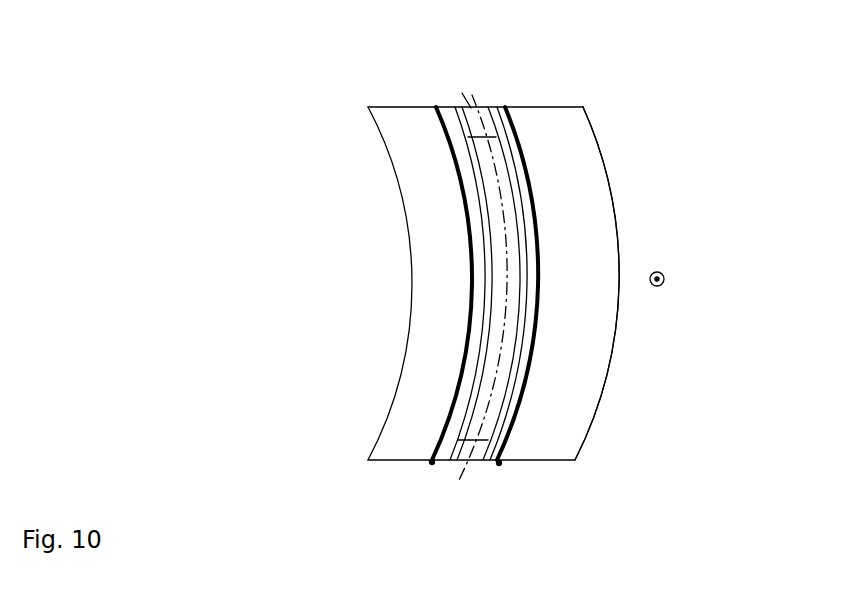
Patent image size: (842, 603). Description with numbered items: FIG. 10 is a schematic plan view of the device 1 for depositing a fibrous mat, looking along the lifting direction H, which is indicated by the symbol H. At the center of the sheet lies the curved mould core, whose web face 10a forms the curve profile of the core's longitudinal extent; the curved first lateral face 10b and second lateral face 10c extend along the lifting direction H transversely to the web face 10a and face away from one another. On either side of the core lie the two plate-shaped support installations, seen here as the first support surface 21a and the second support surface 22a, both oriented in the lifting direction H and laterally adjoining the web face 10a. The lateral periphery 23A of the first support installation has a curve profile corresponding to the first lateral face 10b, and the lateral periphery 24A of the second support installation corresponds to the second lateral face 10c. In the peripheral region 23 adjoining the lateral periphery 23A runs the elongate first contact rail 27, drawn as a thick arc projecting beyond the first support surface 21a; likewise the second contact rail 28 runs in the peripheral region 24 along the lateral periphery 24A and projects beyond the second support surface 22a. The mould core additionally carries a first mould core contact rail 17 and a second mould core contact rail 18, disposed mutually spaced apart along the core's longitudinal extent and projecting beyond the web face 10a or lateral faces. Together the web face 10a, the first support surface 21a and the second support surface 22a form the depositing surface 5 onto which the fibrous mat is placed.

The electrical machine assembly 1 is at (664, 126).
The depositing surface 5 is at (552, 126).
The web face 10a is at (480, 112).
The first lateral face 10b is at (474, 213).
The second lateral face 10c is at (523, 230).
The first mould core contact rail 17 is at (483, 432).
The second mould core contact rail 18 is at (484, 138).
The first support surface 21a is at (403, 444).
The second support surface 22a is at (587, 385).
The peripheral region 23 is at (436, 470).
The lateral periphery 23A is at (455, 115).
The peripheral region 24 is at (490, 470).
The lateral periphery 24A is at (505, 108).
The first contact rail 27 is at (431, 463).
The second contact rail 28 is at (500, 464).
The lifting direction H is at (665, 279).